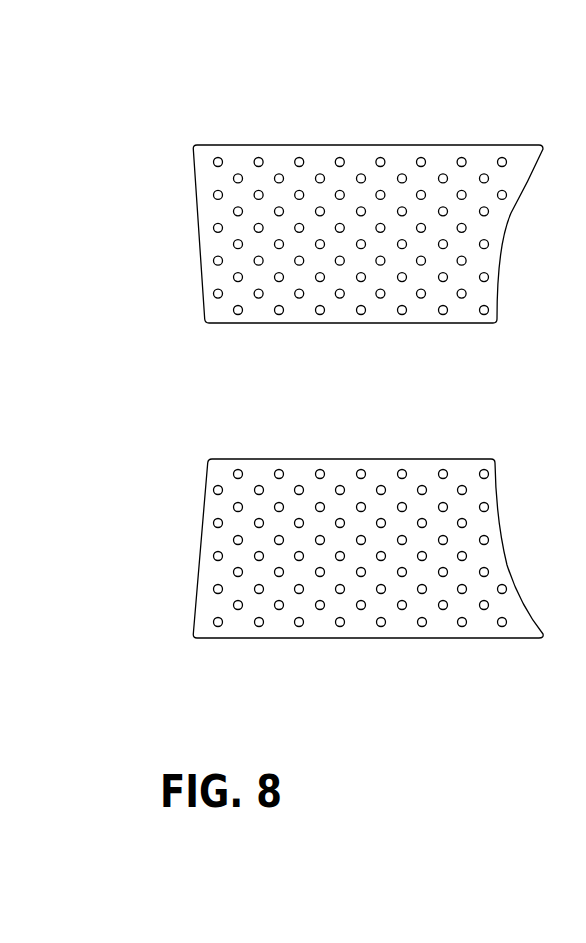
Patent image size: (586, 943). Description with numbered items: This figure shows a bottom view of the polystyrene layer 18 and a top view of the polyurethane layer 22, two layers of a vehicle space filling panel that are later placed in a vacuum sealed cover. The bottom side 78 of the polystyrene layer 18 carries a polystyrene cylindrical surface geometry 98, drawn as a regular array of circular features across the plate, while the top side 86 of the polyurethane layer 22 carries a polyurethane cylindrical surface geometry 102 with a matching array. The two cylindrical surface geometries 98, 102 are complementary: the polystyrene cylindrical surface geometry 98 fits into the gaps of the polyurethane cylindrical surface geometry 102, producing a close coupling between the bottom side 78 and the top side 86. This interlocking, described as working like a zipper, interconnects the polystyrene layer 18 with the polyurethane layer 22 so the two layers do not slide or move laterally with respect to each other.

The polystyrene layer 18 is at (278, 138).
The bottom side of the polystyrene layer 78 is at (242, 160).
The polystyrene cylindrical surface geometry 98 is at (400, 176).
The polyurethane layer 22 is at (200, 465).
The top side of the polyurethane layer 86 is at (223, 570).
The polyurethane cylindrical surface geometry 102 is at (442, 470).